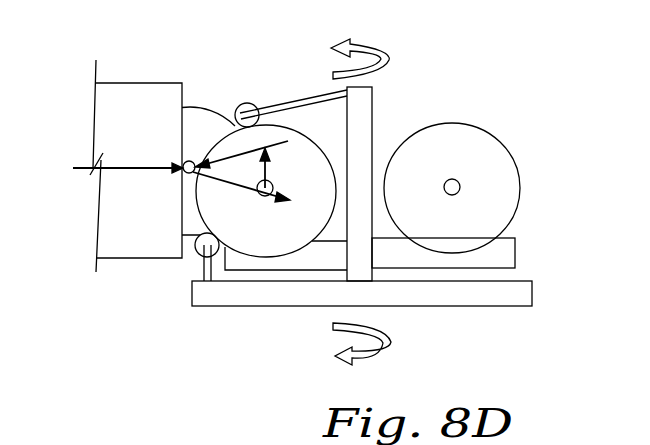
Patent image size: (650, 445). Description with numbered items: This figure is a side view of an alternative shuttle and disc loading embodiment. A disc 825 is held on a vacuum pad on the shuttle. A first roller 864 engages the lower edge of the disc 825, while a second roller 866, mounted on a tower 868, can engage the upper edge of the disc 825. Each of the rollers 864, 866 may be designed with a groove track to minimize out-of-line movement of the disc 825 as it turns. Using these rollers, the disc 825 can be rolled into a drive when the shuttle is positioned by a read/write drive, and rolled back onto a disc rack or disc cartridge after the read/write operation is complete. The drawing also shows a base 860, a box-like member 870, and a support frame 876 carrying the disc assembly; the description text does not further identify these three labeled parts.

The disc 825 is at (255, 248).
The base 860 is at (483, 297).
The first roller 864 is at (198, 252).
The second roller 866 is at (247, 103).
The tower 868 is at (372, 110).
The housing 870 is at (151, 83).
The support frame 876 is at (303, 260).